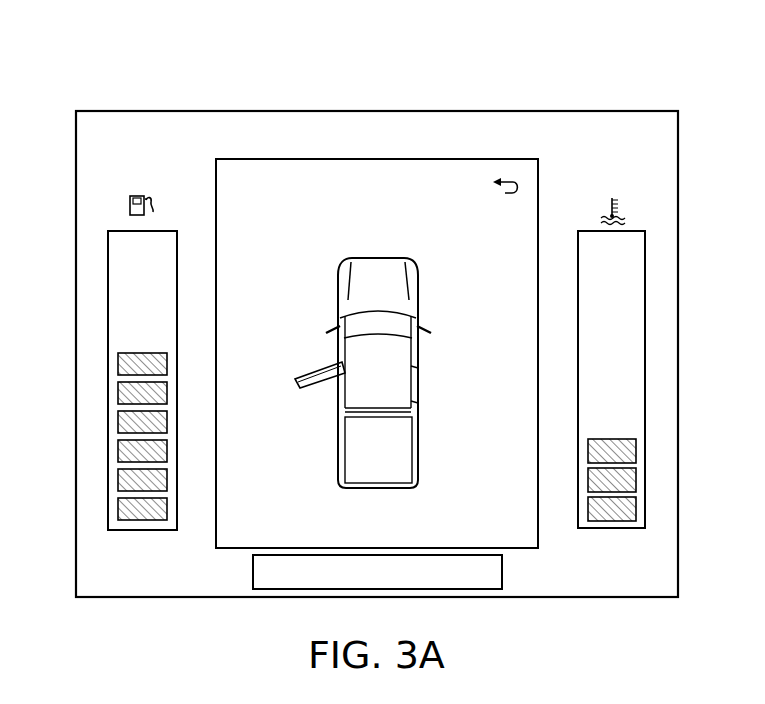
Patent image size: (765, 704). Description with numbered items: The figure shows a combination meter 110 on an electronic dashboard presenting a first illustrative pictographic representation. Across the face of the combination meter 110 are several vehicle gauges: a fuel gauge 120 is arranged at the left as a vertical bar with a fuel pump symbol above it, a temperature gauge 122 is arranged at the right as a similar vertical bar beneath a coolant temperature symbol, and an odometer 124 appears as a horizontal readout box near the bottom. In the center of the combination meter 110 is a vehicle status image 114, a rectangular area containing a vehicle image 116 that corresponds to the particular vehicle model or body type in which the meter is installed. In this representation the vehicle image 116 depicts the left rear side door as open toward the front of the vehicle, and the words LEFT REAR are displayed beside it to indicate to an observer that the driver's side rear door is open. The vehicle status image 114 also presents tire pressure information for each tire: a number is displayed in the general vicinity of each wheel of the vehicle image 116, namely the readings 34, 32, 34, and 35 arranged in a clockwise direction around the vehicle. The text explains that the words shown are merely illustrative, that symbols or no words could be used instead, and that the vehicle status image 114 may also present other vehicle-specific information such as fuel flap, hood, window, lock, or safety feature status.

The combination meter 110 is at (99, 77).
The vehicle status image 114 is at (262, 158).
The vehicle image 116 is at (377, 262).
The fuel gauge 120 is at (122, 308).
The temperature gauge 122 is at (633, 368).
The odometer 124 is at (472, 580).
The front right sensor indicator 32 is at (446, 293).
The sensor indicator 34 is at (381, 381).
The rear left sensor indicator 35 is at (315, 469).